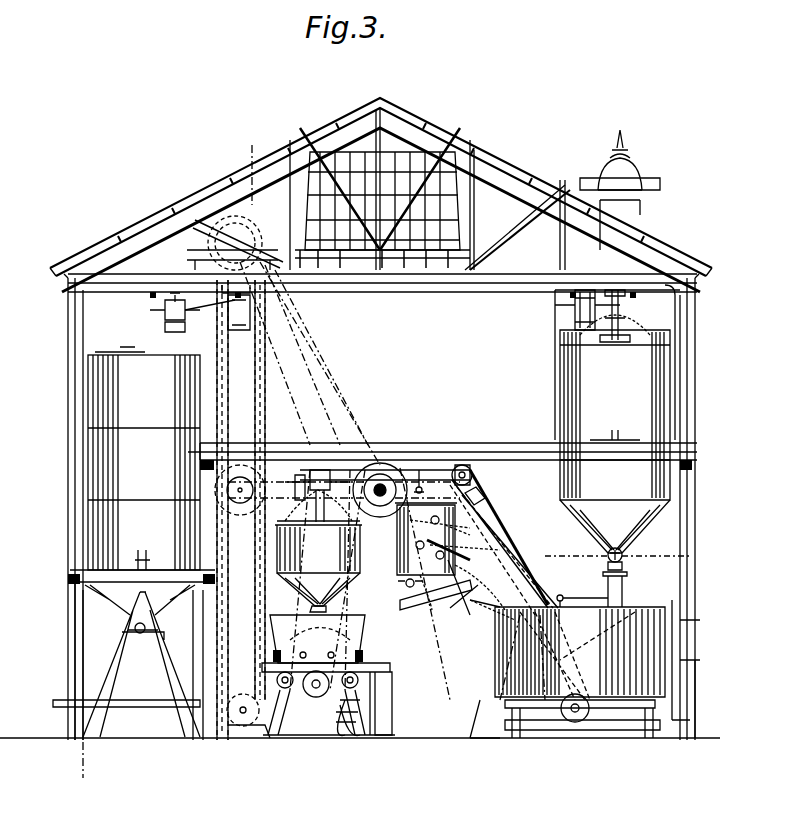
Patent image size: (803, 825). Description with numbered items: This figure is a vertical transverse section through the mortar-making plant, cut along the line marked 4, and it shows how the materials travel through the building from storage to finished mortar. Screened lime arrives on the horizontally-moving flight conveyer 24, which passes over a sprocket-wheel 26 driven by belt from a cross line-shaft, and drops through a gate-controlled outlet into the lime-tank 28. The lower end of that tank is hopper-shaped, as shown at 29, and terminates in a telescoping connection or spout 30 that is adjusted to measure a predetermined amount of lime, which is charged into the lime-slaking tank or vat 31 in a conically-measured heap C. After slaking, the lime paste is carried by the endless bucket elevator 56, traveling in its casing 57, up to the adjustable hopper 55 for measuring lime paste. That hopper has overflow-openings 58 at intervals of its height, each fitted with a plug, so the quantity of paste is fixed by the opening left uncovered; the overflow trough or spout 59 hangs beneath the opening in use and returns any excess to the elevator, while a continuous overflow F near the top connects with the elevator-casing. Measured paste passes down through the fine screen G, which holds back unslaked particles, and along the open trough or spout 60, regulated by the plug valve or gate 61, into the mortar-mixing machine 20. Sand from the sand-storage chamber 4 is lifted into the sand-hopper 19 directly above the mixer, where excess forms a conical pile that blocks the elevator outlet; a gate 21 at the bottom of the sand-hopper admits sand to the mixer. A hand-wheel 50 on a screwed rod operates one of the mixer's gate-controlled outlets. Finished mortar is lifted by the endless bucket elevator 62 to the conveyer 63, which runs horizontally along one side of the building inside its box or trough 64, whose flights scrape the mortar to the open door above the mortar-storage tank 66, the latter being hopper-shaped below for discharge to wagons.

The sand-storage chamber 4 is at (162, 462).
The sand-hopper 19 is at (318, 538).
The mortar-mixing machine 20 is at (317, 639).
The gate 21 is at (308, 608).
The horizontally-moving flight conveyer 24 is at (622, 312).
The sprocket-wheel 26 is at (576, 318).
The lime-tank 28 is at (615, 407).
The hopper-shaped lower end 29 is at (615, 526).
The telescoping connection or spout 30 is at (628, 572).
The lime-slaking tank or vat 31 is at (580, 672).
The hand-wheel 50 is at (311, 700).
The adjustable hopper 55 is at (452, 572).
The endless bucket elevator 56 is at (490, 505).
The casing 57 is at (510, 540).
The overflow-openings 58 is at (420, 470).
The overflow trough or spout 59 is at (485, 612).
The open trough or spout 60 is at (395, 612).
The plug valve or gate 61 is at (404, 586).
The endless bucket elevator 62 is at (241, 510).
The conveyer 63 is at (162, 320).
The box or trough 64 is at (172, 332).
The mortar-storage tank 66 is at (142, 543).
The continuous overflow F is at (476, 485).
The fine screen G is at (426, 605).
The conically-measured heap C is at (582, 599).